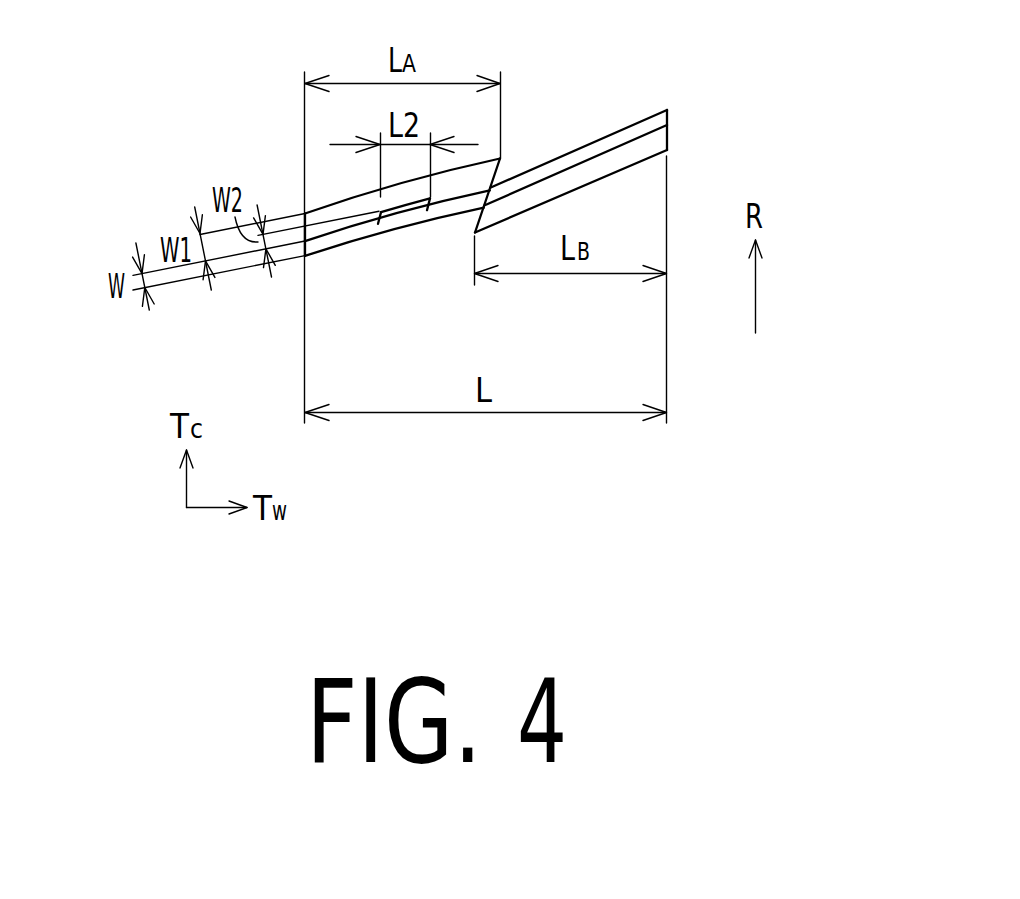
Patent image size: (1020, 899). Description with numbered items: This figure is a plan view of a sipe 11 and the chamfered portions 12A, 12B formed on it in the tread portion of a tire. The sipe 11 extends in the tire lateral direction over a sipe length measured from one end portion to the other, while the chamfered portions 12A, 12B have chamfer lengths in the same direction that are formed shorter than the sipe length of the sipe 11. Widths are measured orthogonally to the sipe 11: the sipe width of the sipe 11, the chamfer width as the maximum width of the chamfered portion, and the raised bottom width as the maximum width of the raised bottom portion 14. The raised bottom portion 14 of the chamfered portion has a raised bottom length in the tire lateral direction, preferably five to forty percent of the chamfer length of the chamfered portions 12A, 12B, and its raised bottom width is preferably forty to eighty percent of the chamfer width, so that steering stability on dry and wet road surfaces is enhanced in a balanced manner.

The sipe 11 is at (486, 195).
The chamfered portion 12A is at (402, 264).
The chamfered portion 12B is at (553, 192).
The raised bottom portion 14 is at (408, 208).